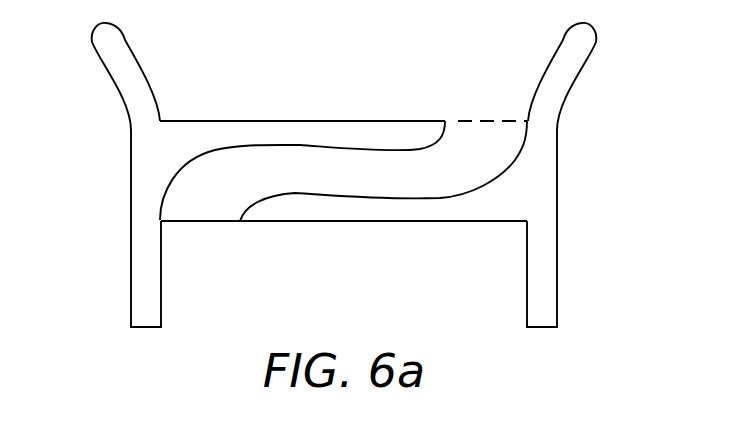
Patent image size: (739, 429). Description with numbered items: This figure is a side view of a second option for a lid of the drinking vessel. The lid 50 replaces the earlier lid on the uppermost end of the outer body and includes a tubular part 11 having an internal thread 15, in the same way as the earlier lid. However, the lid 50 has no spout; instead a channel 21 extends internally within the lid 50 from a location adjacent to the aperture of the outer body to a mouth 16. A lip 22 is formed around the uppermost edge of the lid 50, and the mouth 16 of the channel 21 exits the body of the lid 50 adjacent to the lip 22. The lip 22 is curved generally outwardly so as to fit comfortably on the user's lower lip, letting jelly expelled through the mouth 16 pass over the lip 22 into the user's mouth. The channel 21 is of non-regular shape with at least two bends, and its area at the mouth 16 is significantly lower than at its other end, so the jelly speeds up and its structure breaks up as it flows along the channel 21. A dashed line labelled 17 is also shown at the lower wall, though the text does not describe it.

The lid 50 is at (260, 63).
The lip 22 is at (92, 42).
The channel 21 is at (330, 184).
The mouth 16 is at (484, 118).
The lower opening 17 is at (203, 224).
The internal thread 15 is at (161, 290).
The tubular part 11 is at (557, 268).